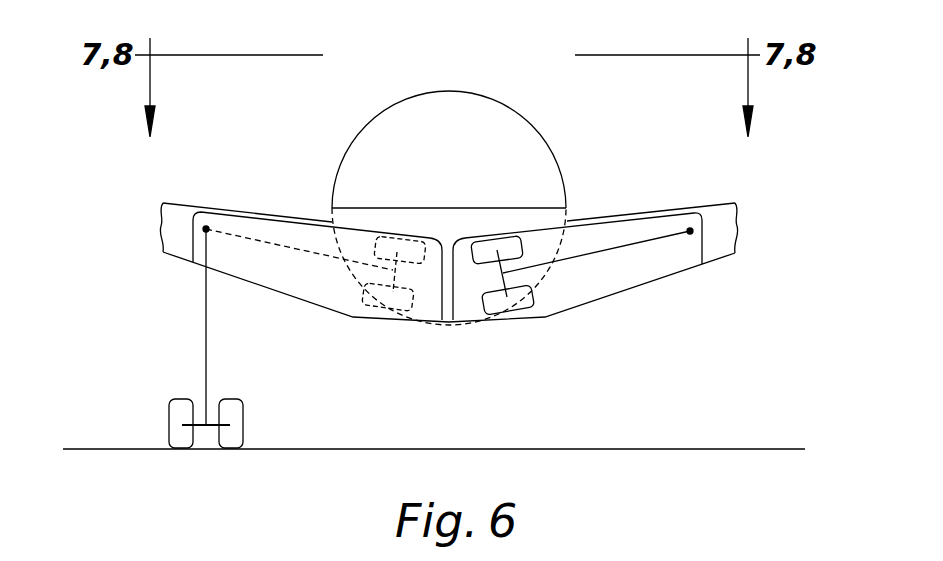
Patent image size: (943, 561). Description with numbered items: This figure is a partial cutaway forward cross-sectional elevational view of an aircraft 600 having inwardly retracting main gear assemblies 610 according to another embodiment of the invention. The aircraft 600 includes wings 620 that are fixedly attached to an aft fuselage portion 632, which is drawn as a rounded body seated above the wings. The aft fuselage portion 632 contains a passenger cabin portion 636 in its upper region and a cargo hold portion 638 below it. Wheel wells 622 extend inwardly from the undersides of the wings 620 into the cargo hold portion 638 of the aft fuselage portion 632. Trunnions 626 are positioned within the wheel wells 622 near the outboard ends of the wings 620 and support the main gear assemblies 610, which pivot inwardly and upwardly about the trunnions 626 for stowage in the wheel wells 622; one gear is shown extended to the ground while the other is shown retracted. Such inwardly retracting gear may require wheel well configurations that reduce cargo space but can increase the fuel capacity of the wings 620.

The aircraft 600 is at (459, 177).
The main gear assemblies 610 is at (170, 362).
The wings 620 is at (450, 266).
The wheel wells 622 is at (328, 311).
The trunnions 626 is at (195, 238).
The aft fuselage portion 632 is at (557, 148).
The passenger cabin portion 636 is at (413, 137).
The cargo hold portion 638 is at (400, 220).